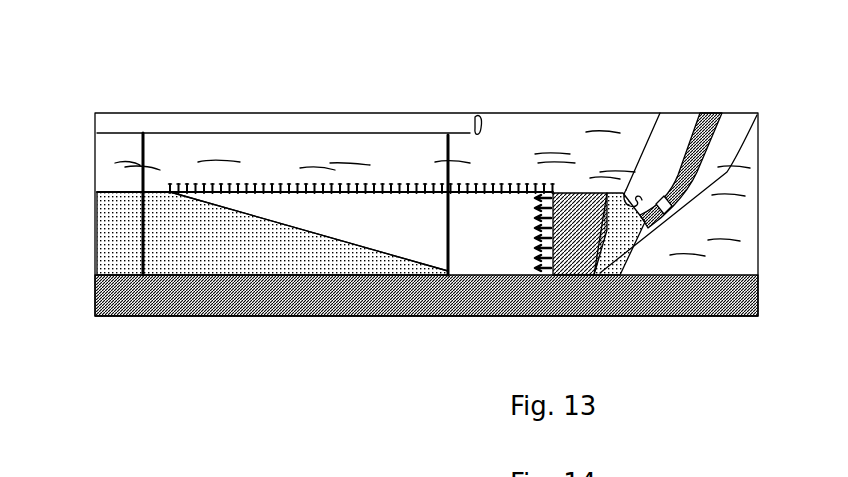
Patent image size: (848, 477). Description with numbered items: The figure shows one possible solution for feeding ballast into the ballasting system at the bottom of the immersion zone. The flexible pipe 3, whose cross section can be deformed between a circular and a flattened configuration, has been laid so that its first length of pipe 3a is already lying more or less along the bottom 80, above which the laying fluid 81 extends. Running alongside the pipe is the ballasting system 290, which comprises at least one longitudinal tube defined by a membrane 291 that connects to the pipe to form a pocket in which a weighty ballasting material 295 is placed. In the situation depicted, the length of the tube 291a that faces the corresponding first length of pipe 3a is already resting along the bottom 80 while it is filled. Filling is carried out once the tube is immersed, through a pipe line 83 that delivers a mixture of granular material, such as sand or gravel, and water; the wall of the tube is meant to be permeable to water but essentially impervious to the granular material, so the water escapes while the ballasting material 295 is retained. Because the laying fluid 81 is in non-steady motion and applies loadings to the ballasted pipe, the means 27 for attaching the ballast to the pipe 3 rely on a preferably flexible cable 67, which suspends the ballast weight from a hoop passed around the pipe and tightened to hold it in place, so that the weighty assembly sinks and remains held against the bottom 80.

The pipe 3 is at (287, 103).
The first length of pipe 3a is at (465, 65).
The means for attaching a ballast 27 is at (137, 236).
The cable 67 is at (143, 140).
The bottom 80 is at (666, 272).
The laying fluid 81 is at (572, 130).
The pipe line 83 is at (715, 162).
The ballasting system 290 is at (288, 284).
The membrane 291 is at (106, 192).
The length of the tube 291a is at (450, 438).
The ballasting material 295 is at (372, 264).